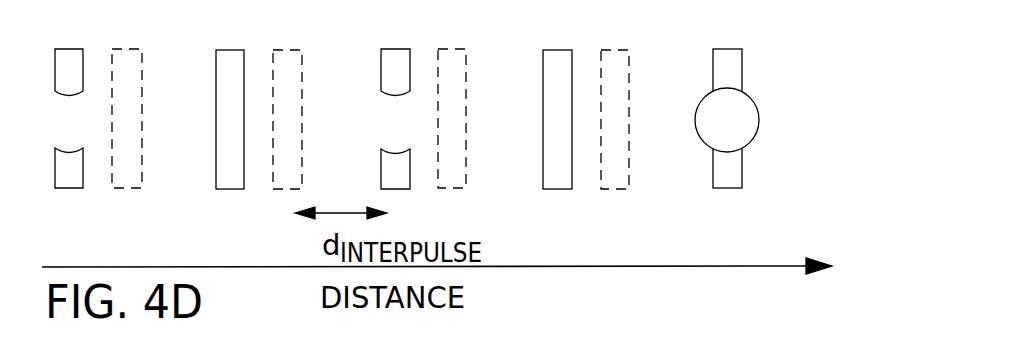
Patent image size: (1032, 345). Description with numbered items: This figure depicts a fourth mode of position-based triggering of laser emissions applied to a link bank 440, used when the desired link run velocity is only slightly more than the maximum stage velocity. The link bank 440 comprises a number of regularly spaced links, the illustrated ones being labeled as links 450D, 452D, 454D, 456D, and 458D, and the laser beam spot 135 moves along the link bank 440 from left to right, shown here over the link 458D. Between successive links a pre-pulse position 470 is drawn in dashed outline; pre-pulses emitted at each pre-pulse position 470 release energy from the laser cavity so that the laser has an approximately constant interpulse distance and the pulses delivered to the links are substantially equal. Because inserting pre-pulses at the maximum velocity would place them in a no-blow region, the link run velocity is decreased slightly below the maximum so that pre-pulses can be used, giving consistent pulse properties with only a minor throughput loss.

The link bank 440 is at (481, 97).
The link 450D is at (72, 68).
The link 452D is at (230, 74).
The link 454D is at (393, 72).
The link 456D is at (560, 68).
The link 458D is at (746, 96).
The pre-pulse position 470 is at (127, 98).
The laser beam spot 135 is at (744, 135).